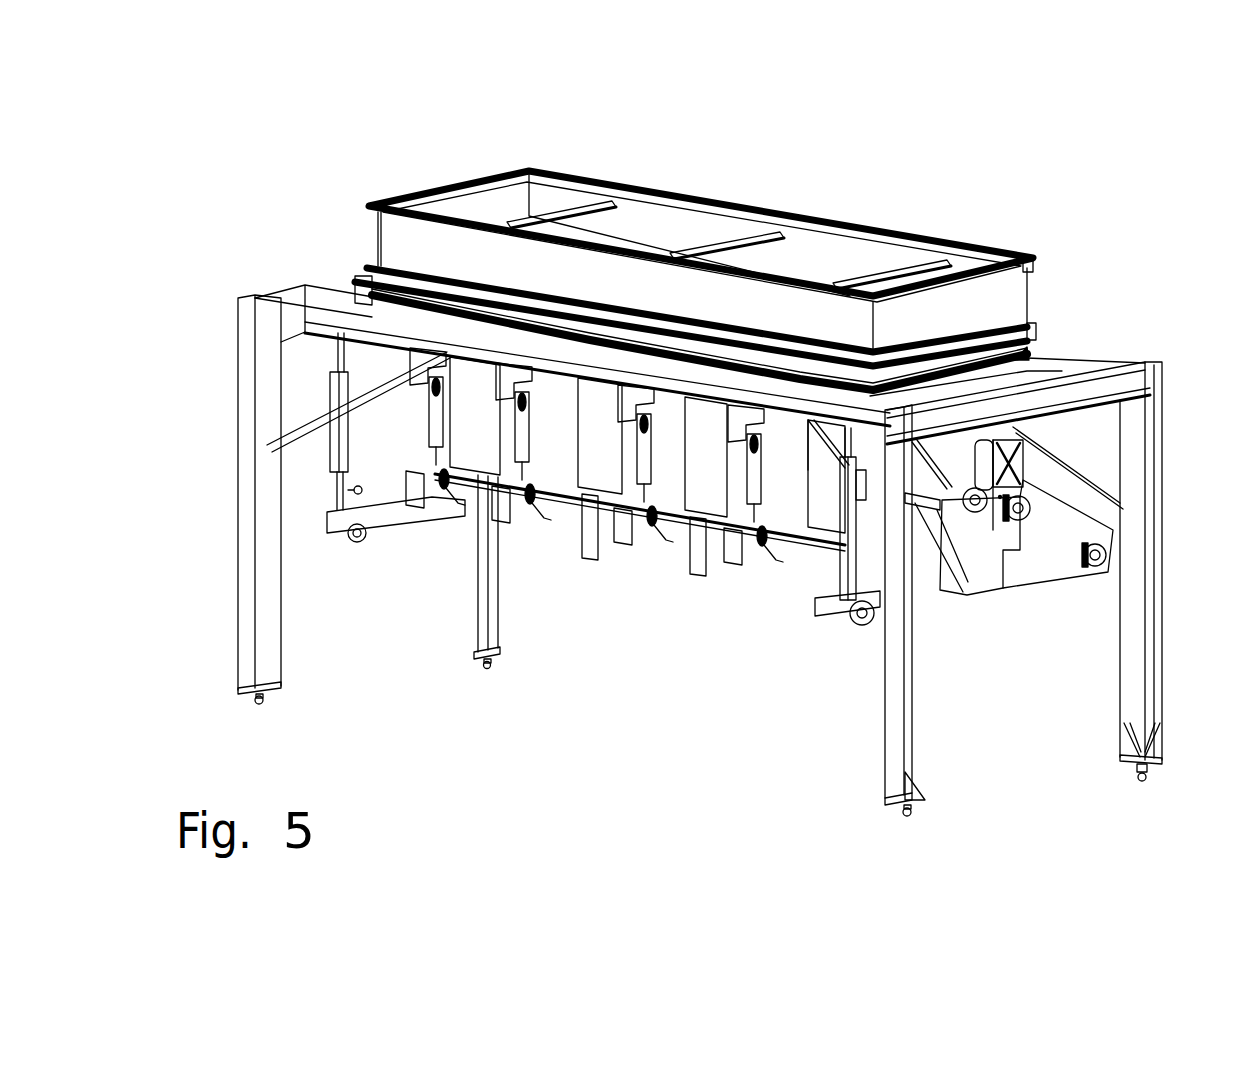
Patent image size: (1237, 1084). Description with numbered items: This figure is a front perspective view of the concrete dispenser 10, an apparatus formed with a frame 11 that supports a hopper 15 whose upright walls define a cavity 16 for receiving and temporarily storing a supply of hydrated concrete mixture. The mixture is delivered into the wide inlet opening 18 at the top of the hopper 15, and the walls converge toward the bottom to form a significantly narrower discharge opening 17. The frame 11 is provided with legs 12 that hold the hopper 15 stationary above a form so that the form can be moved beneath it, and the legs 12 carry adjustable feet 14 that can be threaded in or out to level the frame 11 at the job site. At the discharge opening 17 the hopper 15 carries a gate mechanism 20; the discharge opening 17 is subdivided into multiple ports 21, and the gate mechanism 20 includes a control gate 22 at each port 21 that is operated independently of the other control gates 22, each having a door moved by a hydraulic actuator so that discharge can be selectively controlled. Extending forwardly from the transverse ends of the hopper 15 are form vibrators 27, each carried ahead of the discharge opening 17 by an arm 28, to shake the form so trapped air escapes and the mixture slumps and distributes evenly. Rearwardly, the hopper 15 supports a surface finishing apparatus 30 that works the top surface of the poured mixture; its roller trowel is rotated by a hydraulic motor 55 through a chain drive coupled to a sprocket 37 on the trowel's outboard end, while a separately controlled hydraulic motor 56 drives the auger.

The concrete dispenser 10 is at (1047, 180).
The frame 11 is at (305, 287).
The legs 12 is at (250, 597).
The adjustable feet 14 is at (252, 703).
The hopper 15 is at (492, 178).
The cavity 16 is at (667, 225).
The discharge opening 17 is at (703, 602).
The inlet opening 18 is at (829, 243).
The gate mechanism 20 is at (620, 648).
The ports 21 is at (688, 572).
The control gate 22 is at (525, 522).
The form vibrators 27 is at (332, 497).
The arm 28 is at (388, 514).
The surface finishing apparatus 30 is at (1023, 608).
The sprocket 37 is at (1096, 566).
The hydraulic motor 55 is at (1033, 500).
The hydraulic motor 56 is at (975, 475).